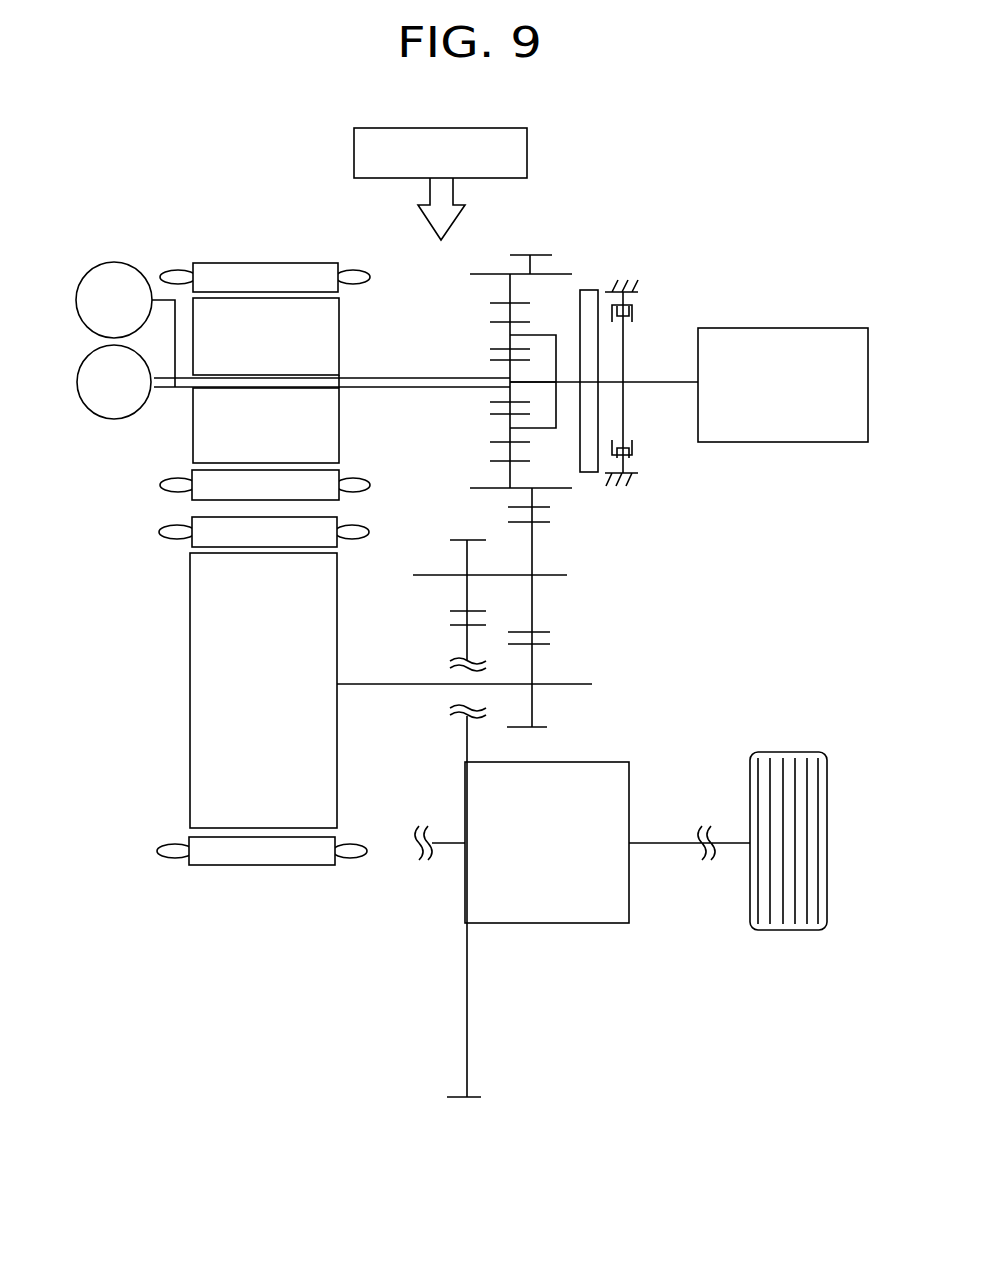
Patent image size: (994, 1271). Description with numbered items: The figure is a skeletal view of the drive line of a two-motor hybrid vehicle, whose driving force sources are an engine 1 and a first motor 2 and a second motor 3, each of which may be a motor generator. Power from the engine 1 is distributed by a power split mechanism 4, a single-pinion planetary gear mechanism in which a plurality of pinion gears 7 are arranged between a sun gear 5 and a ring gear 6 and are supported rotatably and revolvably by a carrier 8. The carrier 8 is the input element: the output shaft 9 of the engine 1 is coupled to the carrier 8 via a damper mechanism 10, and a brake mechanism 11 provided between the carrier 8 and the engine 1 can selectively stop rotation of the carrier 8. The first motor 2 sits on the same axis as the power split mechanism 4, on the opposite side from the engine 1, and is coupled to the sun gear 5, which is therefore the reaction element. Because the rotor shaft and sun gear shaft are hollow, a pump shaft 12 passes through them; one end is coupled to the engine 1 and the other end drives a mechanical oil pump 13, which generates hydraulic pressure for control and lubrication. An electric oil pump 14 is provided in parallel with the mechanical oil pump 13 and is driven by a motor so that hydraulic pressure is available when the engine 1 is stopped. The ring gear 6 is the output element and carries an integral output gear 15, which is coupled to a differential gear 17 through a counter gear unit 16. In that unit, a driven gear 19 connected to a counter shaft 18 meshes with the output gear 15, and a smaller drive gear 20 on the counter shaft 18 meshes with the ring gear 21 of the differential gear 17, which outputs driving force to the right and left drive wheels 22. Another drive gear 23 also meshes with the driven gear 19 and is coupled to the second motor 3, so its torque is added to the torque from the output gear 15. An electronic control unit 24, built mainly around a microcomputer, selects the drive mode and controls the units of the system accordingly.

The engine 1 is at (781, 328).
The first motor 2 is at (264, 238).
The second motor 3 is at (166, 800).
The power split mechanism 4 is at (457, 446).
The sun gear 5 is at (488, 360).
The ring gear 6 is at (488, 303).
The pinion gears 7 is at (488, 322).
The carrier 8 is at (543, 335).
The output shaft 9 is at (661, 384).
The damper mechanism 10 is at (587, 473).
The brake mechanism 11 is at (636, 313).
The pump shaft 12 is at (175, 392).
The mechanical oil pump 13 is at (112, 419).
The electric oil pump 14 is at (123, 262).
The output gear 15 is at (536, 255).
The counter gear unit 16 is at (605, 607).
The differential gear 17 is at (630, 772).
The counter shaft 18 is at (560, 574).
The driven gear 19 is at (545, 632).
The drive gear 20 is at (450, 541).
The ring gear 21 is at (450, 625).
The drive wheels 22 is at (793, 752).
The drive gear 23 is at (548, 727).
The electronic control unit 24 is at (528, 150).